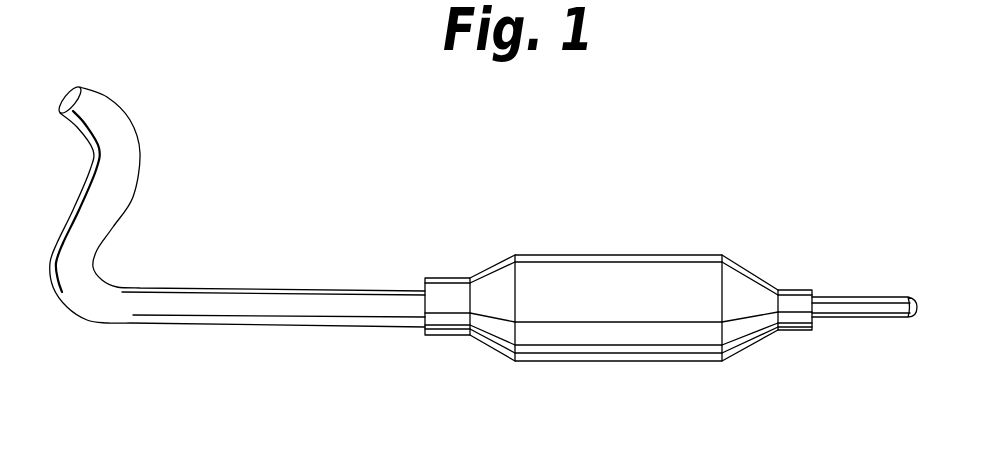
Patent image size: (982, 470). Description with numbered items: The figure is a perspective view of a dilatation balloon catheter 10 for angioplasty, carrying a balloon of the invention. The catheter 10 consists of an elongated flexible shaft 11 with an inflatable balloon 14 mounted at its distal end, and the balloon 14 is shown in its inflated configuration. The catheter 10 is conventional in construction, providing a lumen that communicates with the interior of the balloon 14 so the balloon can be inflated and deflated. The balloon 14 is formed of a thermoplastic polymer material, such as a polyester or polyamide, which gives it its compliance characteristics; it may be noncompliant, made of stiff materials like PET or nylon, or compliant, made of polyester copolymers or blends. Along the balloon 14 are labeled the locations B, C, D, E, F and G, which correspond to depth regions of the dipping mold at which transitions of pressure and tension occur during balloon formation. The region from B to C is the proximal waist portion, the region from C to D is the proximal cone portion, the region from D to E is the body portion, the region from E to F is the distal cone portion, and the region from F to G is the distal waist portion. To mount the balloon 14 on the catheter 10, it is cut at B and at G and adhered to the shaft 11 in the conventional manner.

The dilatation balloon catheter 10 is at (356, 219).
The elongated flexible shaft 11 is at (303, 327).
The inflatable balloon 14 is at (625, 273).
The proximal waist start location B is at (425, 272).
The proximal waist-to-cone transition location C is at (471, 272).
The proximal cone-to-body transition location D is at (517, 250).
The body-to-distal cone transition location E is at (722, 250).
The distal cone-to-waist transition location F is at (782, 287).
The distal waist end location G is at (813, 287).